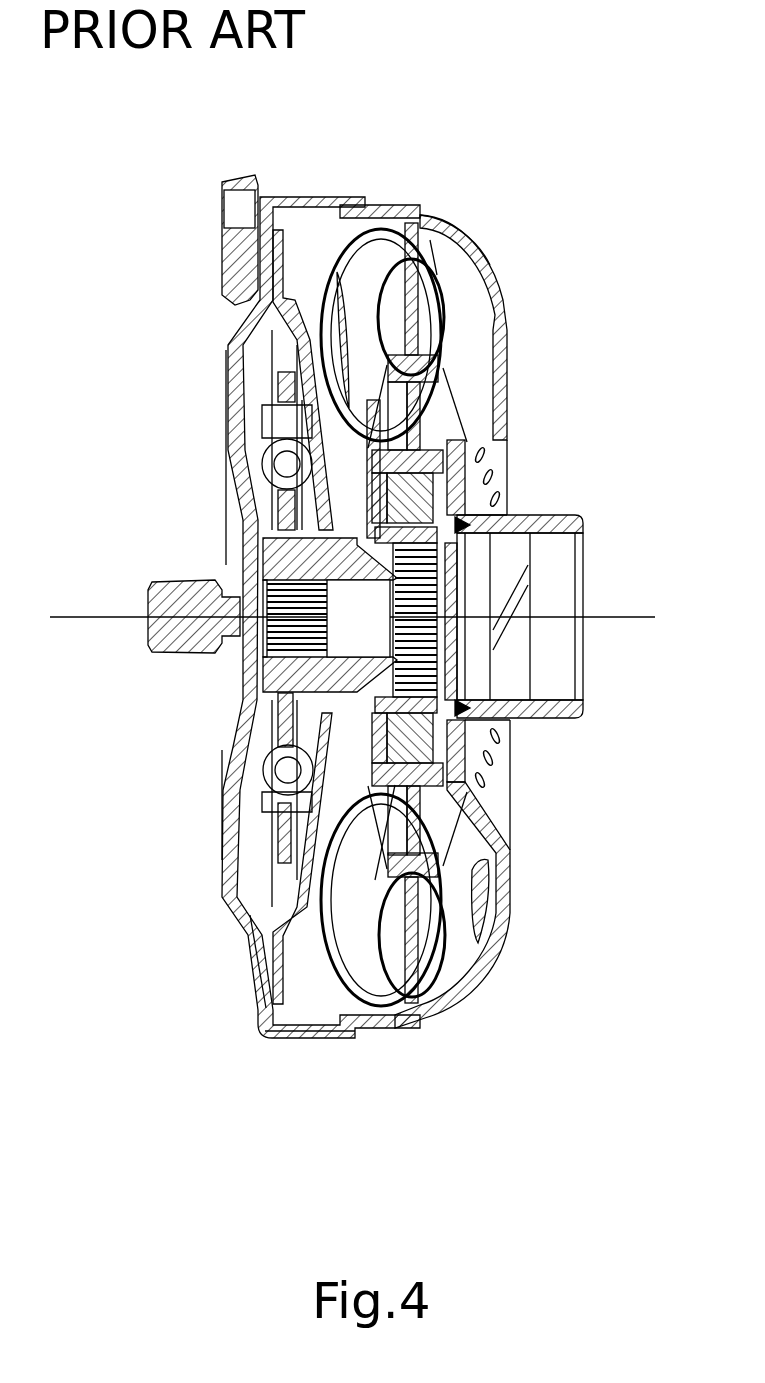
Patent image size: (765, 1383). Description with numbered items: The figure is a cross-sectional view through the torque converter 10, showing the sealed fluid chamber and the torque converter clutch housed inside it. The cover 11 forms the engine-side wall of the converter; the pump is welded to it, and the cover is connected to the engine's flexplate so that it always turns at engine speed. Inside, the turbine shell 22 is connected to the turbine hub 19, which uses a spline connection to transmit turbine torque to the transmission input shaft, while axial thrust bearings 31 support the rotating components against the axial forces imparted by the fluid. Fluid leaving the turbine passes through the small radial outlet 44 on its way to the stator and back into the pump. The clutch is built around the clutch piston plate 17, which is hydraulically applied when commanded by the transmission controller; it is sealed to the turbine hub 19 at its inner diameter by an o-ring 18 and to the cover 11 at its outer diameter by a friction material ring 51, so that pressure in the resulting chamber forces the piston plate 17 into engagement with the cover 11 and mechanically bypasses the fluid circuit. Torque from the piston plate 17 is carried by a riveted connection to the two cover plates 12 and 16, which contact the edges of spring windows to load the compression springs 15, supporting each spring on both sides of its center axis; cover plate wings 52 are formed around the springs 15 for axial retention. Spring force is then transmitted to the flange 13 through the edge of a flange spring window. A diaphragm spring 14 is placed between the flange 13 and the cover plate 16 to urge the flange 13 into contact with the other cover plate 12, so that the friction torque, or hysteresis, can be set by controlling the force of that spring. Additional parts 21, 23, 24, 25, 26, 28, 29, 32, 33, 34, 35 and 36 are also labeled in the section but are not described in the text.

The torque converter 10 is at (516, 231).
The cover 11 is at (228, 368).
The cover plate 12 is at (300, 397).
The flange 13 is at (262, 892).
The diaphragm spring 14 is at (312, 495).
The compression springs 15 is at (290, 768).
The cover plate 16 is at (285, 415).
The clutch piston plate 17 is at (283, 318).
The o-ring 18 is at (300, 672).
The turbine hub 19 is at (293, 664).
The sleeve 21 is at (418, 737).
The turbine shell 22 is at (348, 245).
The spring 23 is at (365, 258).
The inner spring 24 is at (400, 278).
The lever 25 is at (445, 405).
The clamp 26 is at (455, 742).
The cylinder flange 28 is at (455, 703).
The perforated wall 29 is at (480, 505).
The axial thrust bearings 31 is at (470, 455).
The spring seat 32 is at (440, 275).
The shell 33 is at (463, 293).
The shell portion 34 is at (470, 240).
The flange 35 is at (570, 520).
The cylinder 36 is at (510, 565).
The small radial outlet 44 is at (377, 827).
The friction material ring 51 is at (265, 975).
The cover plate wings 52 is at (280, 847).